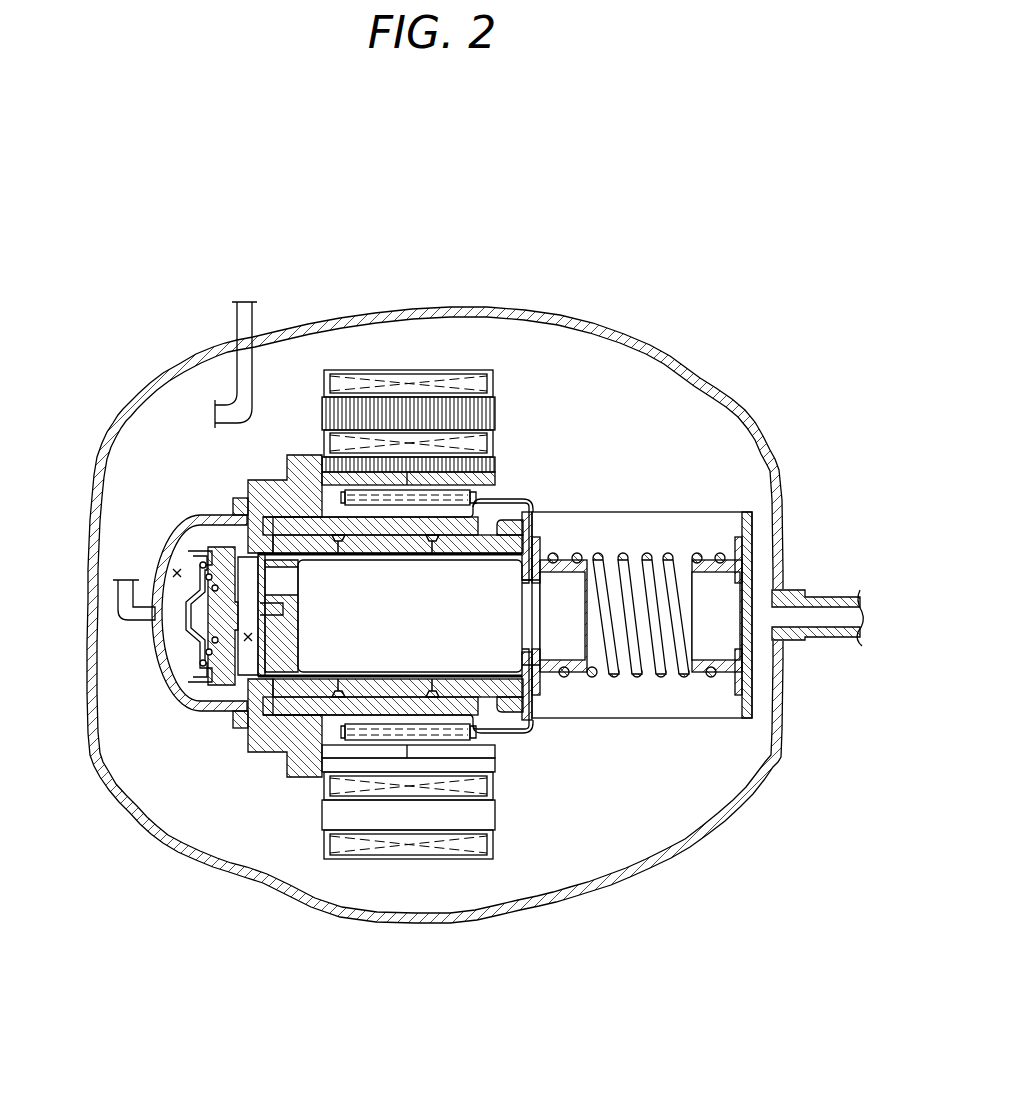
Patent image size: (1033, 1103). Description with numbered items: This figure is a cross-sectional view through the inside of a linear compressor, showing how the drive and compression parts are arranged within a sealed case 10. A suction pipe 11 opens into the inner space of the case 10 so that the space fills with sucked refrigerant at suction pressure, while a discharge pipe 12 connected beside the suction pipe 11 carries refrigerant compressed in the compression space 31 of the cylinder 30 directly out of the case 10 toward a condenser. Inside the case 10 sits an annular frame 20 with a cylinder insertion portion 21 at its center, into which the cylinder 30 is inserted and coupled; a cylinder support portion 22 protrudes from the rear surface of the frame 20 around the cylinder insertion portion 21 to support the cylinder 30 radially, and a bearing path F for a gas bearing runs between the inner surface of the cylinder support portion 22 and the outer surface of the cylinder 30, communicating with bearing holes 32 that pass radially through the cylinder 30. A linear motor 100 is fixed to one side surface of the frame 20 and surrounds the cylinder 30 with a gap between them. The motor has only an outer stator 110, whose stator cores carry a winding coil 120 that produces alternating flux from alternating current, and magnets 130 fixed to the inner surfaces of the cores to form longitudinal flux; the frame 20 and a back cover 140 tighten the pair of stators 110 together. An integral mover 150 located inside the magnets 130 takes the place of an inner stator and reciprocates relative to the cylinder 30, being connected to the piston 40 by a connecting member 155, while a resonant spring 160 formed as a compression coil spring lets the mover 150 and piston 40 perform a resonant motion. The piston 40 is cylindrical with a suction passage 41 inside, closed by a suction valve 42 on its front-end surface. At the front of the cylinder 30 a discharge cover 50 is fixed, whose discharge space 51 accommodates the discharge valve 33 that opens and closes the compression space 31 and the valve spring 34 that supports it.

The case 10 is at (743, 415).
The suction pipe 11 is at (828, 597).
The discharge pipe 12 is at (237, 323).
The frame 20 is at (355, 742).
The cylinder insertion portion 21 is at (282, 733).
The cylinder support portion 22 is at (375, 705).
The cylinder 30 is at (392, 688).
The compression space 31 is at (248, 637).
The bearing hole 32 is at (433, 690).
The discharge valve 33 is at (232, 652).
The valve spring 34 is at (203, 663).
The piston 40 is at (412, 672).
The suction passage 41 is at (426, 620).
The suction valve 42 is at (263, 595).
The discharge cover 50 is at (167, 542).
The discharge space 51 is at (177, 573).
The linear motor 100 is at (405, 531).
The stator 110 is at (355, 410).
The winding coil 120 is at (377, 380).
The magnet 130 is at (433, 478).
The back cover 140 is at (670, 523).
The integral mover 150 is at (460, 493).
The connecting member 155 is at (522, 500).
The resonance spring 160 is at (622, 555).
The bearing path F is at (357, 533).